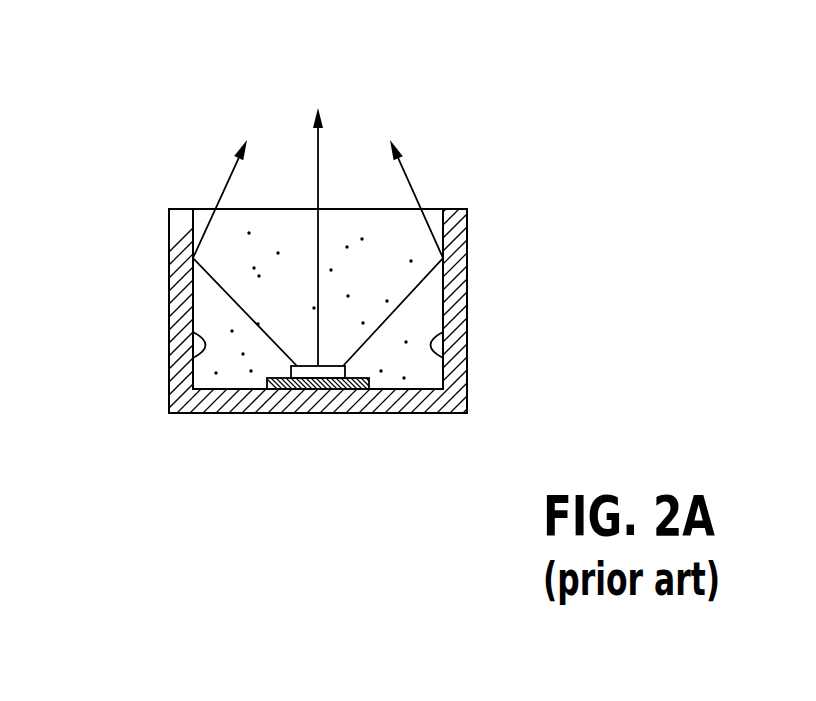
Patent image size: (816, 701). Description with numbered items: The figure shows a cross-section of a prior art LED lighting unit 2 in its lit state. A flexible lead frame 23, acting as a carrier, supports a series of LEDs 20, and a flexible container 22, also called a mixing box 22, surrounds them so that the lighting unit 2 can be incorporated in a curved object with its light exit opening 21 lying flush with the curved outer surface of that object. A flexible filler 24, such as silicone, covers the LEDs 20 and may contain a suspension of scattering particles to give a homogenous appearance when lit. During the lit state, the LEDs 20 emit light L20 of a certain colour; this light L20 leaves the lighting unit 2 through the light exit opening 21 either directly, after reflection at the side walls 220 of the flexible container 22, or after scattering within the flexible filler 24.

The LED lighting unit 2 is at (455, 157).
The LEDs 20 is at (307, 368).
The light exit opening 21 is at (205, 210).
The flexible container 22 is at (455, 274).
The side walls 220 is at (210, 360).
The flexible lead frame 23 is at (331, 384).
The flexible filler 24 is at (413, 368).
The light L20 is at (320, 148).